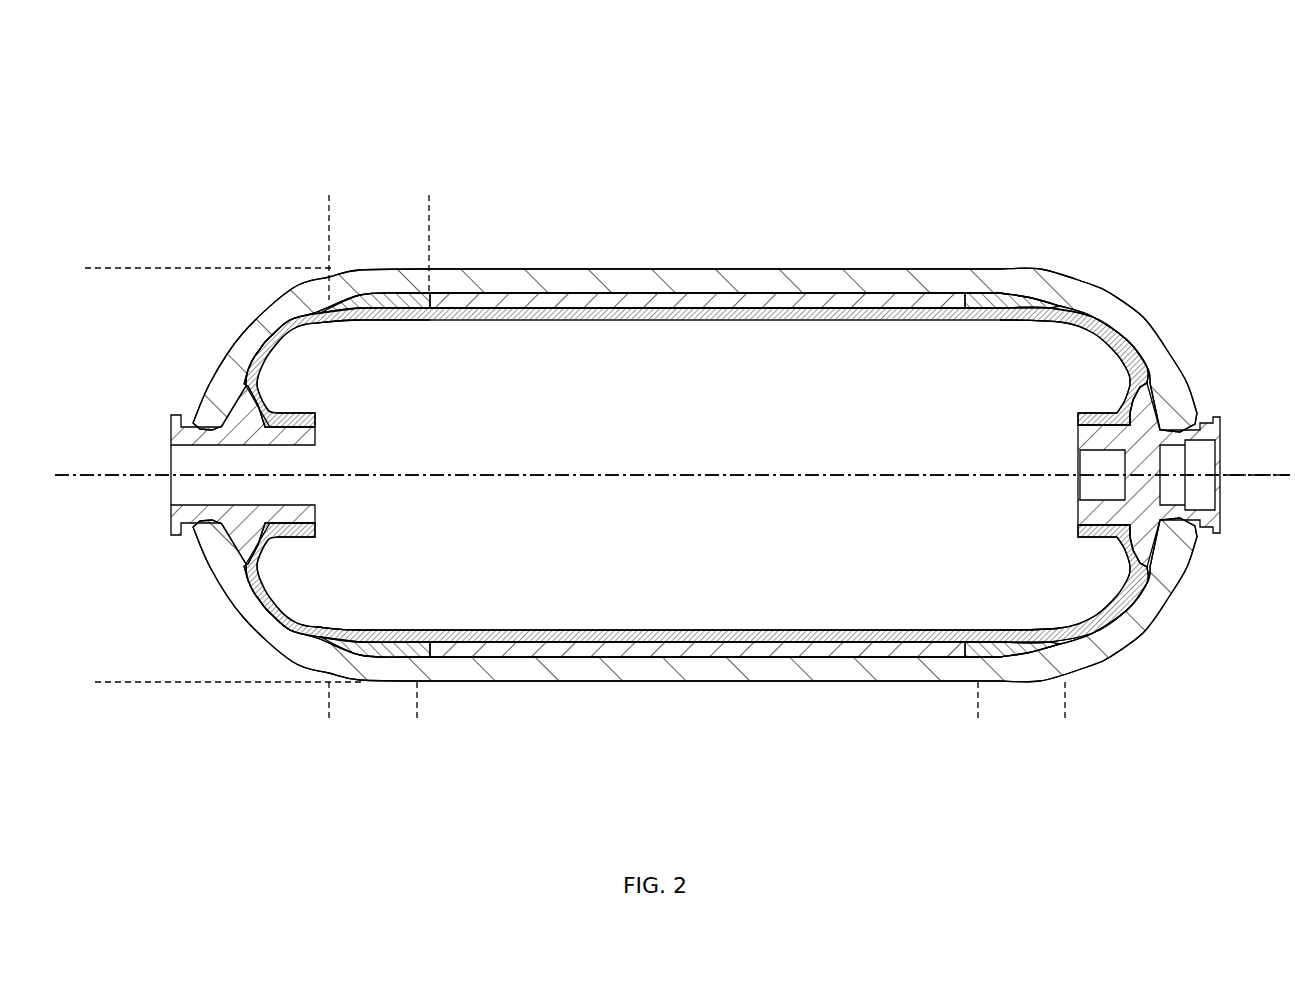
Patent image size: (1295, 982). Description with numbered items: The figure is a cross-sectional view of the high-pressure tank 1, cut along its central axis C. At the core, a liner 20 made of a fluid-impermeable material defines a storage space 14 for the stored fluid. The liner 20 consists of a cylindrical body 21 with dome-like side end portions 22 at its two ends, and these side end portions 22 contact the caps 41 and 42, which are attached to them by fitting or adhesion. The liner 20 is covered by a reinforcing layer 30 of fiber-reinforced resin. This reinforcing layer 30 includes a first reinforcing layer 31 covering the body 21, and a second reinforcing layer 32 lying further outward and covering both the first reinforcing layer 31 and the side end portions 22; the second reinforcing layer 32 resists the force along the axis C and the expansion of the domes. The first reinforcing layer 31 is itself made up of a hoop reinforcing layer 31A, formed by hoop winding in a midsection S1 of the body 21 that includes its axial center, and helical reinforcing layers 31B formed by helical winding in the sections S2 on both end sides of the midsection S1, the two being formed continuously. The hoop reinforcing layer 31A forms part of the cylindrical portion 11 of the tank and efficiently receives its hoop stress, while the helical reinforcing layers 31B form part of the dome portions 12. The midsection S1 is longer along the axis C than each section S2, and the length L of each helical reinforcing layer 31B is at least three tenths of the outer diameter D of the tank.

The high-pressure tank 1 is at (996, 102).
The cylindrical portion 11 is at (905, 660).
The dome portion 12 is at (1123, 625).
The storage space 14 is at (826, 542).
The liner 20 is at (696, 475).
The body 21 is at (727, 320).
The side end portion 22 is at (1095, 377).
The reinforcing layer 30 is at (695, 401).
The first reinforcing layer 31 is at (690, 414).
The hoop reinforcing layer 31A is at (610, 293).
The helical reinforcing layer 31B is at (1000, 297).
The second reinforcing layer 32 is at (1060, 287).
The cap 41 is at (230, 548).
The cap 42 is at (1155, 538).
The axis C is at (1235, 470).
The outer diameter D is at (139, 268).
The length of helical reinforcing layer L is at (329, 228).
The midsection S1 is at (978, 712).
The section on end side S2 is at (1051, 718).